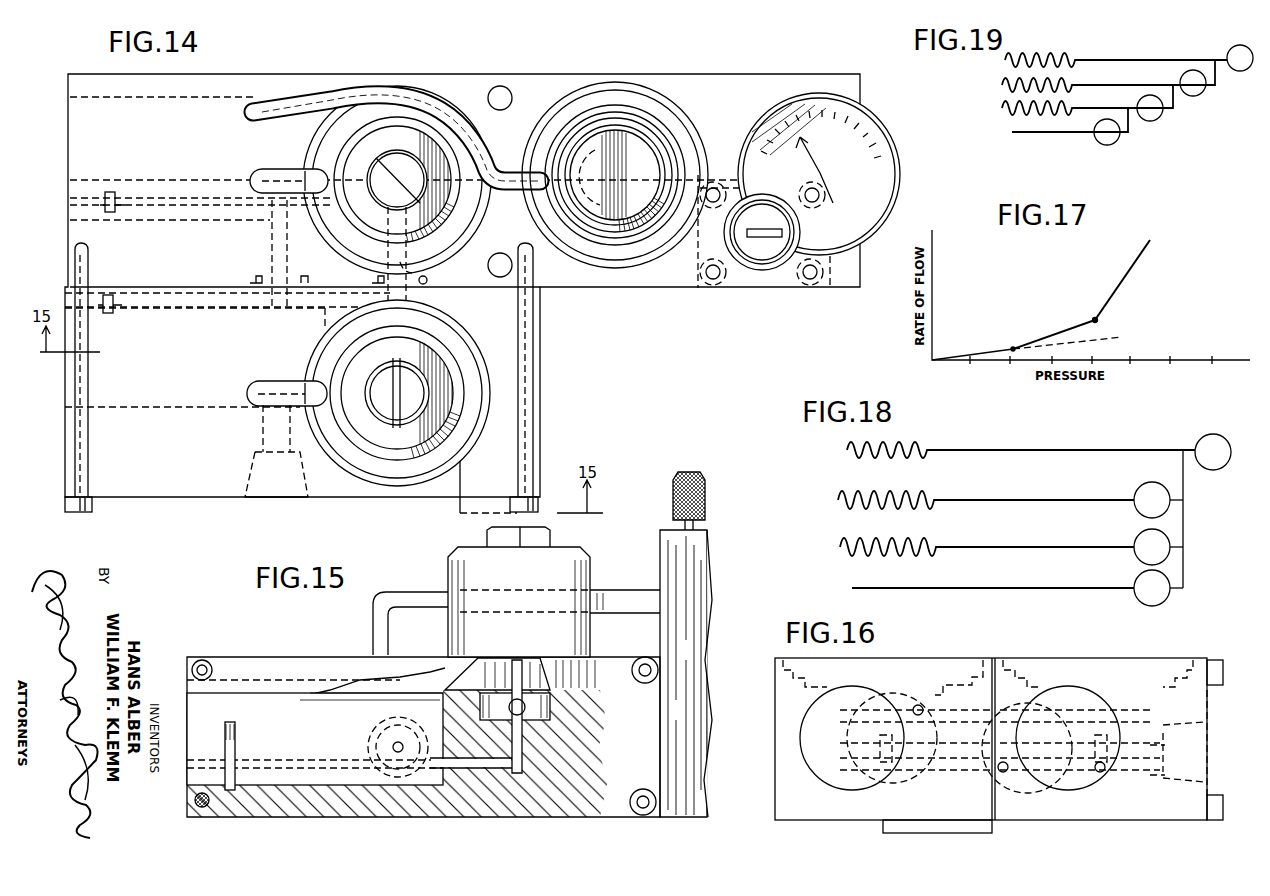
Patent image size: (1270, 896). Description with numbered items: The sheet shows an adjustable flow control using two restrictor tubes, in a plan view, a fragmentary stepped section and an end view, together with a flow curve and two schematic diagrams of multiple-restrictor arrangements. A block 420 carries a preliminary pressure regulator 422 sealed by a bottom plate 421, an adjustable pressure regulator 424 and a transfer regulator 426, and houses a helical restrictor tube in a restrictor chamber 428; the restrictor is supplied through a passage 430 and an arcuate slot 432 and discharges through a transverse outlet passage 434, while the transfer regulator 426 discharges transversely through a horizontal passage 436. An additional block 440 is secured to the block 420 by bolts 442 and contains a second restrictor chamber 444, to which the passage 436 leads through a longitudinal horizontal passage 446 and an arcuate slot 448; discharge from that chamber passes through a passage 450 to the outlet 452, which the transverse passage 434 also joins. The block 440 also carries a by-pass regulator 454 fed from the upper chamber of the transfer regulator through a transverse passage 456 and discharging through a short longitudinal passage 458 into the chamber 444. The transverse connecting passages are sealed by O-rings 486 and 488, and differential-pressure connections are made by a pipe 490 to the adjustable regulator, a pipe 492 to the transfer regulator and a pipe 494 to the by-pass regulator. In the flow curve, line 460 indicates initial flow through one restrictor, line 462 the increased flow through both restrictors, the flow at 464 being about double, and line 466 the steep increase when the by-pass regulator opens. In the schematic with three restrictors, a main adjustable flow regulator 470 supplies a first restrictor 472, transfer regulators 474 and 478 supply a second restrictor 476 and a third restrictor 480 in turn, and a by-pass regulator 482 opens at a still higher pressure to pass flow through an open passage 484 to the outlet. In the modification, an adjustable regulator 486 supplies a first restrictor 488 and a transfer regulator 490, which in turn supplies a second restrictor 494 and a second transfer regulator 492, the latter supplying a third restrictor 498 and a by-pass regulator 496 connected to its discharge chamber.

In FIG. 14, the block 420 is at (798, 75).
In FIG. 15, the block 420 is at (708, 708).
In FIG. 16, the block 420 is at (775, 748).
In FIG. 14, the bottom plate 421 is at (700, 292).
In FIG. 16, the bottom plate 421 is at (990, 833).
In FIG. 14, the preliminary pressure regulator 422 is at (766, 272).
In FIG. 14, the adjustable pressure regulator 424 is at (650, 96).
In FIG. 15, the adjustable pressure regulator 424 is at (697, 465).
In FIG. 14, the transfer regulator 426 is at (470, 222).
In FIG. 15, the transfer regulator 426 is at (596, 558).
In FIG. 14, the restrictor chamber 428 is at (212, 100).
In FIG. 16, the restrictor chamber 428 is at (864, 779).
In FIG. 14, the passage 430 is at (208, 222).
In FIG. 14, the arcuate slot 432 is at (112, 190).
In FIG. 14, the transverse outlet passage 434 is at (272, 247).
In FIG. 15, the transverse outlet passage 434 is at (392, 748).
In FIG. 16, the transverse outlet passage 434 is at (1015, 752).
In FIG. 14, the horizontal passage 436 is at (420, 262).
In FIG. 15, the horizontal passage 436 is at (530, 762).
In FIG. 16, the horizontal passage 436 is at (925, 775).
In FIG. 14, the additional block 440 is at (542, 360).
In FIG. 15, the additional block 440 is at (380, 816).
In FIG. 16, the additional block 440 is at (1210, 712).
In FIG. 14, the bolts 442 is at (538, 501).
In FIG. 15, the bolts 442 is at (208, 660).
In FIG. 16, the bolts 442 is at (1210, 658).
In FIG. 14, the restrictor chamber 444 is at (183, 410).
In FIG. 15, the restrictor chamber 444 is at (286, 730).
In FIG. 16, the restrictor chamber 444 is at (1090, 792).
In FIG. 14, the longitudinal horizontal passage 446 is at (204, 310).
In FIG. 15, the longitudinal horizontal passage 446 is at (272, 760).
In FIG. 16, the longitudinal horizontal passage 446 is at (1030, 770).
In FIG. 14, the arcuate slot 448 is at (110, 313).
In FIG. 15, the arcuate slot 448 is at (232, 795).
In FIG. 16, the arcuate slot 448 is at (1040, 795).
In FIG. 14, the passage 450 is at (272, 433).
In FIG. 16, the passage 450 is at (1155, 776).
In FIG. 14, the outlet 452 is at (305, 500).
In FIG. 16, the outlet 452 is at (1208, 775).
In FIG. 14, the by-pass regulator 454 is at (477, 333).
In FIG. 14, the transverse passage 456 is at (410, 318).
In FIG. 15, the transverse passage 456 is at (525, 720).
In FIG. 16, the transverse passage 456 is at (1030, 702).
In FIG. 14, the short longitudinal passage 458 is at (352, 380).
In FIG. 15, the short longitudinal passage 458 is at (500, 760).
In FIG. 16, the short longitudinal passage 458 is at (1095, 768).
In FIG. 17, the line 460 is at (975, 345).
In FIG. 17, the line 462 is at (1050, 328).
In FIG. 17, the flow point 464 is at (1100, 321).
In FIG. 17, the line 466 is at (1120, 286).
In FIG. 18, the main adjustable flow regulator 470 is at (1228, 440).
In FIG. 18, the first restrictor 472 is at (929, 448).
In FIG. 18, the first transfer regulator 474 is at (1137, 491).
In FIG. 18, the second restrictor 476 is at (930, 491).
In FIG. 18, the second transfer regulator 478 is at (1137, 537).
In FIG. 18, the third restrictor 480 is at (940, 538).
In FIG. 18, the by-pass regulator 482 is at (1131, 598).
In FIG. 18, the open passage 484 is at (930, 590).
In FIG. 14, the O-ring 486 is at (302, 277).
In FIG. 15, the O-ring 486 is at (392, 771).
In FIG. 19, the O-ring 486 is at (1230, 50).
In FIG. 14, the O-ring 488 is at (428, 281).
In FIG. 19, the O-ring 488 is at (1072, 56).
In FIG. 14, the pipe 490 is at (450, 102).
In FIG. 15, the pipe 490 is at (612, 594).
In FIG. 19, the pipe 490 is at (1200, 97).
In FIG. 14, the pipe 492 is at (303, 168).
In FIG. 19, the pipe 492 is at (1165, 120).
In FIG. 14, the pipe 494 is at (290, 382).
In FIG. 15, the pipe 494 is at (421, 592).
In FIG. 19, the pipe 494 is at (1076, 83).
In FIG. 19, the by-pass regulator 496 is at (1122, 145).
In FIG. 19, the third restrictor 498 is at (1080, 109).